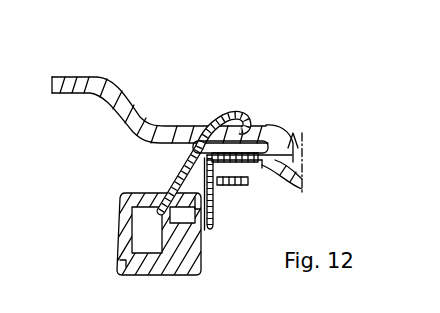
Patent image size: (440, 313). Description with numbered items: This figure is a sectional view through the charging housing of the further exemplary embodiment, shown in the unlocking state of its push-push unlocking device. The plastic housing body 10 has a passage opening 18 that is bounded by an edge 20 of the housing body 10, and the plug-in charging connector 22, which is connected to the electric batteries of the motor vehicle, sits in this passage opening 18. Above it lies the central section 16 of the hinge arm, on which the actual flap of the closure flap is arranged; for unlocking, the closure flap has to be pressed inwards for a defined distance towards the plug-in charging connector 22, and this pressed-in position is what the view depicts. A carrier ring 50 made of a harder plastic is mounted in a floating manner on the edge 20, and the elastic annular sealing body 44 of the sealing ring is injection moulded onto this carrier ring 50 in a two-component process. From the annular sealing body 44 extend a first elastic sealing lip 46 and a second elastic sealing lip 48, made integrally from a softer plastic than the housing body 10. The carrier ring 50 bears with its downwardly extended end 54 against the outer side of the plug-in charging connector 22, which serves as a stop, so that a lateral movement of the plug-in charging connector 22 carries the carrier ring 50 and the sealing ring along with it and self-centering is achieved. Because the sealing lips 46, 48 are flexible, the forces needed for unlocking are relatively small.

The housing body 10 is at (305, 190).
The central section 16 is at (100, 78).
The passage opening 18 is at (68, 218).
The edge 20 is at (252, 167).
The plug-in charging connector 22 is at (154, 268).
The annular sealing body 44 is at (244, 156).
The first elastic sealing lip 46 is at (175, 183).
The second elastic sealing lip 48 is at (230, 120).
The carrier ring 50 is at (213, 202).
The downwardly extended end 54 is at (214, 232).